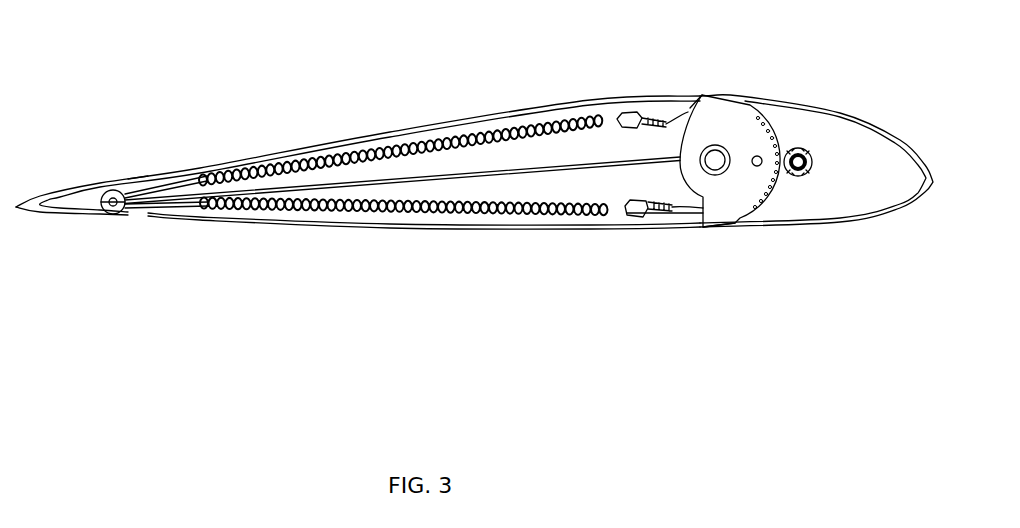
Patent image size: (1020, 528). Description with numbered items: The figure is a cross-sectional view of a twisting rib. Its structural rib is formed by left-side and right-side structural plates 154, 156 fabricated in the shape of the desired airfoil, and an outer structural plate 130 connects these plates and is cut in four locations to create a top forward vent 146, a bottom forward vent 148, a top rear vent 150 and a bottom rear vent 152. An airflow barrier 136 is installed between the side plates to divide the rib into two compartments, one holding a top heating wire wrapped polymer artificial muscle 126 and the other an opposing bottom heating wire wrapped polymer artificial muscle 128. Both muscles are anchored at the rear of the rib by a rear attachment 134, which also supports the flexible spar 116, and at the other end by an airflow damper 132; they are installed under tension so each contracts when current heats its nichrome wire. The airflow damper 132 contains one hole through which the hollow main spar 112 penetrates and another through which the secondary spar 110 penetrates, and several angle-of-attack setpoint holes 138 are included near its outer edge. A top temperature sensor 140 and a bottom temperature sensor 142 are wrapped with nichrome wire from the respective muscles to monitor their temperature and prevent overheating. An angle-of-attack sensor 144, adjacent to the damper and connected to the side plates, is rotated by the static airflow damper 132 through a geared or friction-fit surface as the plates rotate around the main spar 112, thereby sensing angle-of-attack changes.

The secondary spar 110 is at (792, 104).
The hollow main spar 112 is at (692, 106).
The flexible spar 116 is at (90, 152).
The top heating wire wrapped polymer artificial muscle 126 is at (363, 131).
The bottom heating wire wrapped polymer artificial muscle 128 is at (366, 249).
The outer structural plate 130 is at (358, 154).
The airflow damper 132 is at (730, 134).
The rear attachment 134 is at (72, 248).
The airflow barrier 136 is at (402, 226).
The angle-of-attack setpoint holes 138 is at (757, 203).
The top temperature sensor 140 is at (633, 87).
The bottom temperature sensor 142 is at (609, 251).
The angle-of-attack sensor 144 is at (813, 204).
The top forward vent 146 is at (713, 64).
The bottom forward vent 148 is at (690, 263).
The top rear vent 150 is at (161, 135).
The bottom rear vent 152 is at (416, 251).
The left-side structural plate 154 is at (816, 152).
The right-side structural plate 156 is at (813, 162).